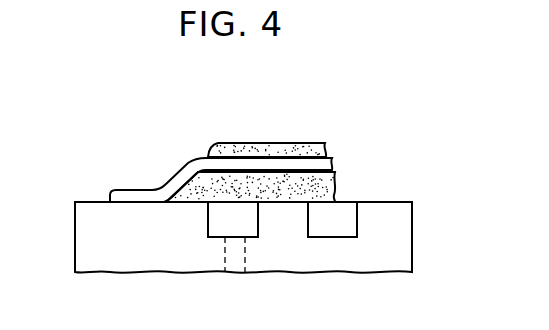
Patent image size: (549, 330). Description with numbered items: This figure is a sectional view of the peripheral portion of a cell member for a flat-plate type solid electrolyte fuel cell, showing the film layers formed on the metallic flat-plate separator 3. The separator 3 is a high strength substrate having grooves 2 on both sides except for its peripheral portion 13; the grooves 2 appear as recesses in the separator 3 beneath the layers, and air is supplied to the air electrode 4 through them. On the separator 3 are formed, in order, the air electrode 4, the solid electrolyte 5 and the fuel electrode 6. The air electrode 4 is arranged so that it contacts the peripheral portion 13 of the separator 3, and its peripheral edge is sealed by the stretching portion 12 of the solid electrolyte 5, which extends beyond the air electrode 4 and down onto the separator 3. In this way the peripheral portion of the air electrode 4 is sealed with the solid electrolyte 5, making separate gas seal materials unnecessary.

The grooves 2 is at (332, 224).
The metallic flat-plate separator 3 is at (402, 203).
The air electrode 4 is at (320, 189).
The solid electrolyte 5 is at (186, 163).
The fuel electrode 6 is at (240, 153).
The stretching portion 12 is at (121, 191).
The peripheral portion 13 is at (86, 202).